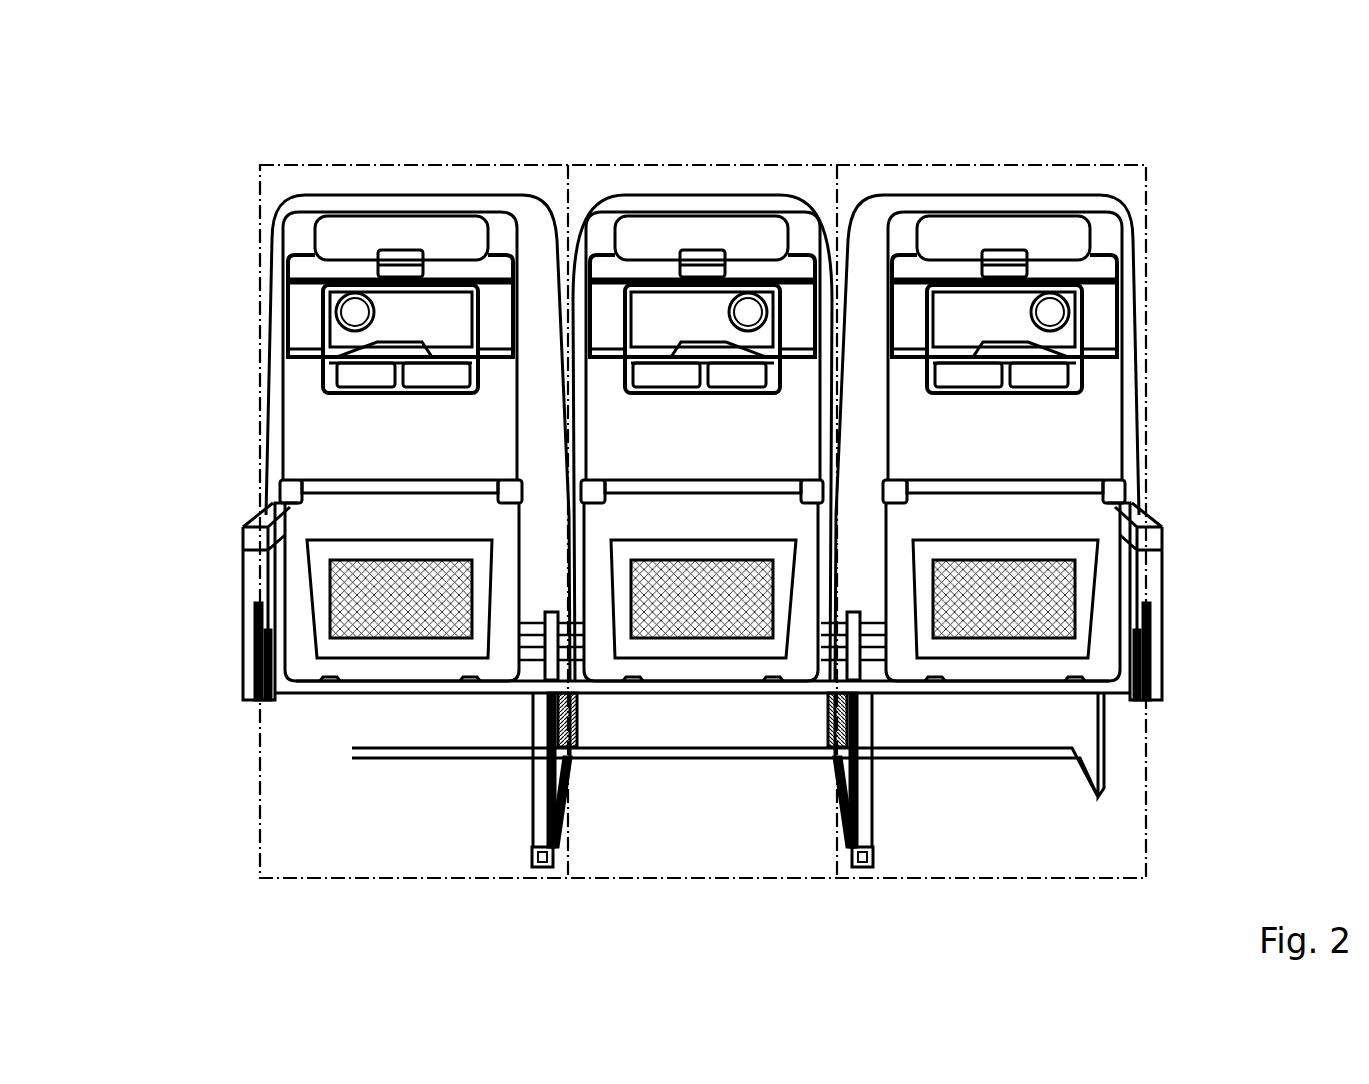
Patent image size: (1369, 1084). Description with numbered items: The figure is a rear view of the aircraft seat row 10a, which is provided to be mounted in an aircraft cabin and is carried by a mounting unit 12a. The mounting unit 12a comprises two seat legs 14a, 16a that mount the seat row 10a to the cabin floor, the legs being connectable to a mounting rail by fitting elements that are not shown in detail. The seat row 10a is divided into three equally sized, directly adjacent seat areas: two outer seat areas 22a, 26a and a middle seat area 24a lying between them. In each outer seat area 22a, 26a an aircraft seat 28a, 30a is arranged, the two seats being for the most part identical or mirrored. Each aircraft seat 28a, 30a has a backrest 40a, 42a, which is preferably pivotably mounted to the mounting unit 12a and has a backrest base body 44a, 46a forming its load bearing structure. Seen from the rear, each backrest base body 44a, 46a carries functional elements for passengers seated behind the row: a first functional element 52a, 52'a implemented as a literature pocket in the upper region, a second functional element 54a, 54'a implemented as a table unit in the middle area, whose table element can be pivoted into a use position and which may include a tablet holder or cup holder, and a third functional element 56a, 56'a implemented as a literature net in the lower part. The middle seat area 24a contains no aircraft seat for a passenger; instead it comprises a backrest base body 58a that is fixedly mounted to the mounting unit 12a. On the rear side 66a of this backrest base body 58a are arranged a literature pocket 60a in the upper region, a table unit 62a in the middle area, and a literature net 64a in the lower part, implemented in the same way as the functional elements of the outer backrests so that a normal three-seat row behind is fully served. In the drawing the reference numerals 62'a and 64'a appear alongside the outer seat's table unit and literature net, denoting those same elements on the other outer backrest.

The aircraft seat row 10a is at (225, 128).
The mounting unit 12a is at (1160, 728).
The seat leg 14a is at (540, 770).
The seat leg 16a is at (863, 777).
The outer seat area 22a is at (1050, 163).
The middle seat area 24a is at (740, 163).
The outer seat area 26a is at (490, 163).
The aircraft seat 28a is at (981, 152).
The aircraft seat 30a is at (420, 148).
The backrest 40a is at (913, 183).
The backrest 42a is at (357, 185).
The backrest base body 44a is at (1095, 437).
The backrest base body 46a is at (312, 438).
The first functional element (literature pocket) 52a is at (1053, 240).
The first functional element (literature pocket) 52'a is at (380, 180).
The second functional element (table unit) 54a is at (1098, 330).
The second functional element (table unit) 54'a is at (294, 321).
The third functional element (literature net) 56a is at (1098, 600).
The third functional element (literature net) 56'a is at (270, 594).
The backrest base body 58a is at (680, 190).
The first functional element (literature pocket) 60a is at (635, 240).
The second functional element (table unit) 62a is at (574, 235).
The display unit 62'a is at (225, 297).
The third functional element (literature net) 64a is at (713, 668).
The storage pocket 64'a is at (260, 584).
The rear side 66a is at (798, 237).